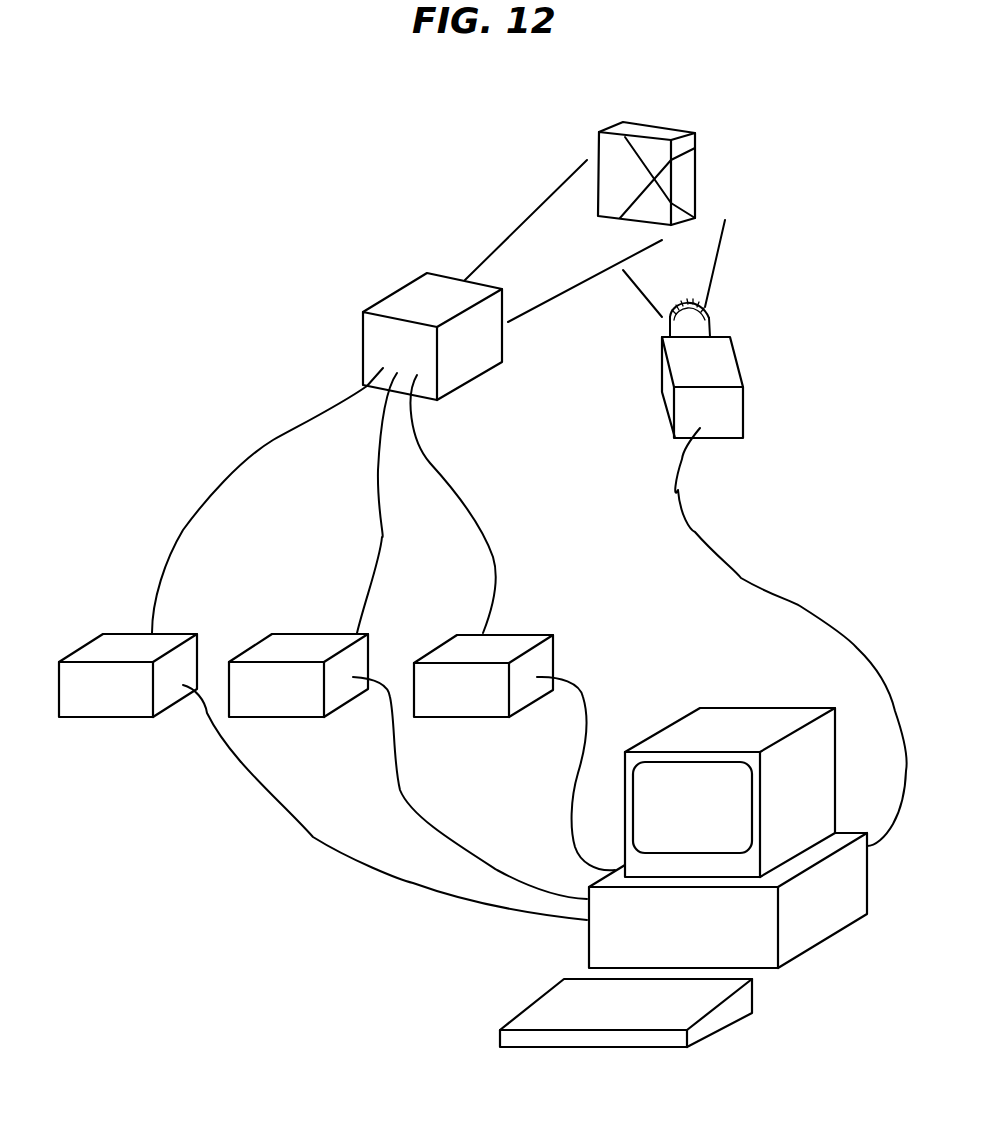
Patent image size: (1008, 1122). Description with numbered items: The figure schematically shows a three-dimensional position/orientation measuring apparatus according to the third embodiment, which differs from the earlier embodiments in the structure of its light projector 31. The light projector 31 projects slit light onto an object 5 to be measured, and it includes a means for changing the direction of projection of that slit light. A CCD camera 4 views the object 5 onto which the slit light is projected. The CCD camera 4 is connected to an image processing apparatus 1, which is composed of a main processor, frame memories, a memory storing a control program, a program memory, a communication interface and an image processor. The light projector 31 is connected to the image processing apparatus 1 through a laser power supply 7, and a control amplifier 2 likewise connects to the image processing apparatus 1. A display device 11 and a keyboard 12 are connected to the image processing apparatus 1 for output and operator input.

The image processing apparatus 1 is at (576, 947).
The control amplifier 2 is at (543, 632).
The CCD camera 4 is at (722, 370).
The object 5 is at (670, 124).
The laser power supply 7 is at (77, 650).
The display device 11 is at (703, 730).
The keyboard 12 is at (570, 1010).
The light projector 31 is at (415, 292).